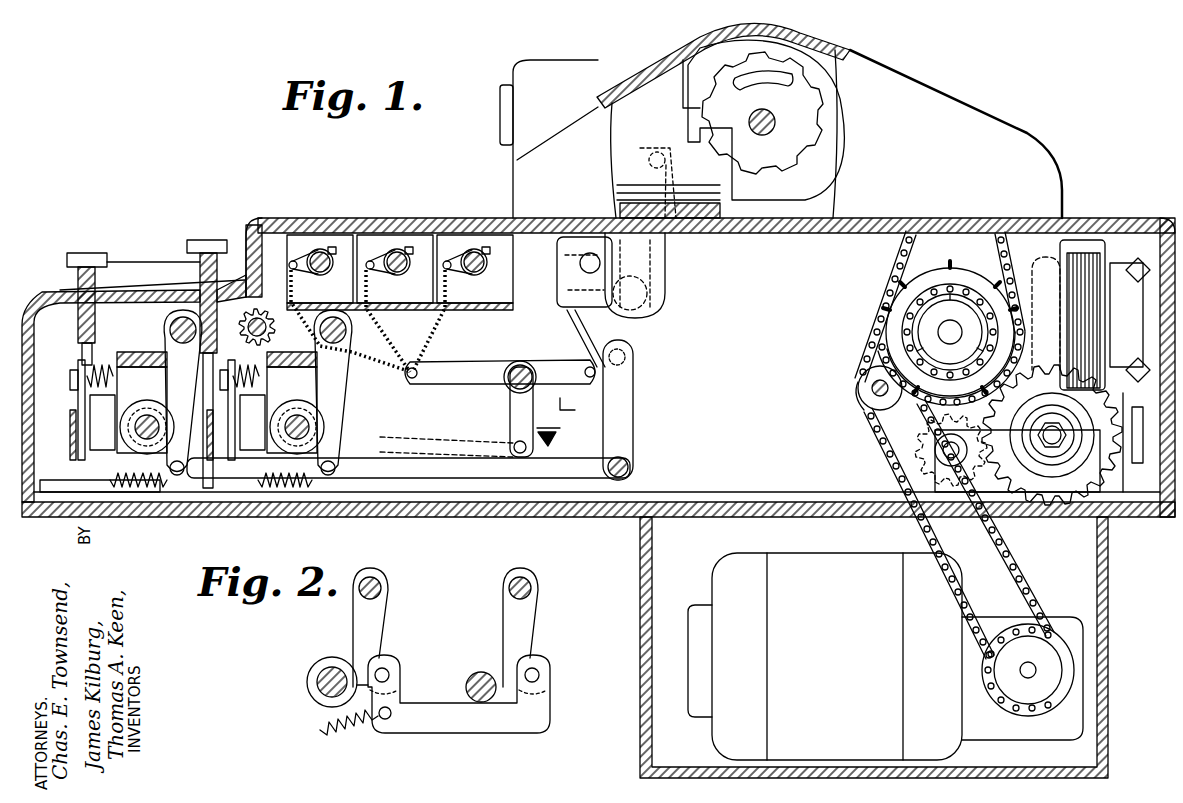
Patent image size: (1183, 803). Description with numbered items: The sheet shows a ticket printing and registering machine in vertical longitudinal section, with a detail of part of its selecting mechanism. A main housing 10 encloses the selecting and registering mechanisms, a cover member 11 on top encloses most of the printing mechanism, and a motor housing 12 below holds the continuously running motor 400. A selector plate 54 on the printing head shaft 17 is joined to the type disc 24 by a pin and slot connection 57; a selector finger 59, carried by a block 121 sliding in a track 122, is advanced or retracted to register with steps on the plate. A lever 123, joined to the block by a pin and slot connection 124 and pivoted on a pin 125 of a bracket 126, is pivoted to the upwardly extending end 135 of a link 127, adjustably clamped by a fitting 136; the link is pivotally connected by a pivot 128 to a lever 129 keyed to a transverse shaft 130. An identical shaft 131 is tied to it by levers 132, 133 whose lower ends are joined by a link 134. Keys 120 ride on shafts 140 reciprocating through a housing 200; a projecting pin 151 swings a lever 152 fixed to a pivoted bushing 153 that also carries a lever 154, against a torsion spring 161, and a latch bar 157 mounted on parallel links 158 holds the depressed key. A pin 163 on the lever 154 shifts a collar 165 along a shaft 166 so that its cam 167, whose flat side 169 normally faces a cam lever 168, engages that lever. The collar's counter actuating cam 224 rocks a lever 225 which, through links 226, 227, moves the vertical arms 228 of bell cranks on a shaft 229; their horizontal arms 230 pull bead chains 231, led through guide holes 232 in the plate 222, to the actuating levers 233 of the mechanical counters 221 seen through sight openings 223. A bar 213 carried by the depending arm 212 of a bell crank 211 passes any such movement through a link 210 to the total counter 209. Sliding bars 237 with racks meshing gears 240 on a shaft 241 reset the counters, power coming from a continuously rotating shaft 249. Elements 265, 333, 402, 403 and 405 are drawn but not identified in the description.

In FIG. 1, the main housing 10 is at (256, 222).
In FIG. 1, the cover member 11 is at (948, 86).
In FIG. 1, the motor housing 12 is at (1108, 590).
In FIG. 1, the printing head shaft 17 is at (775, 118).
In FIG. 1, the type disc 24 is at (693, 72).
In FIG. 1, the selector plate 54 is at (800, 130).
In FIG. 1, the pin and slot connection 57 is at (762, 70).
In FIG. 1, the selector finger 59 is at (722, 110).
In FIG. 1, the keys 120 is at (108, 252).
In FIG. 1, the block 121 is at (676, 145).
In FIG. 1, the track 122 is at (640, 197).
In FIG. 1, the lever 123 is at (645, 185).
In FIG. 1, the pin and slot connection 124 is at (650, 152).
In FIG. 1, the pin 125 is at (648, 293).
In FIG. 1, the bracket 126 is at (665, 268).
In FIG. 1, the link 127 is at (567, 464).
In FIG. 1, the pivot 128 is at (340, 412).
In FIG. 1, the lever 129 is at (342, 385).
In FIG. 1, the shaft 130 is at (355, 325).
In FIG. 2, the shaft 130 is at (535, 586).
In FIG. 1, the shaft 131 is at (173, 322).
In FIG. 2, the shaft 131 is at (382, 584).
In FIG. 2, the lever 132 is at (536, 617).
In FIG. 2, the lever 133 is at (390, 619).
In FIG. 2, the link 134 is at (440, 734).
In FIG. 1, the upwardly extending end 135 is at (634, 415).
In FIG. 1, the fitting 136 is at (630, 467).
In FIG. 1, the shafts 140 is at (153, 259).
In FIG. 1, the projecting pin 151 is at (80, 365).
In FIG. 1, the lever 152 is at (85, 384).
In FIG. 1, the pivoted bushing 153 is at (88, 373).
In FIG. 1, the lever 154 is at (92, 396).
In FIG. 1, the latch bar 157 is at (70, 430).
In FIG. 1, the parallel link 158 is at (80, 462).
In FIG. 1, the torsion spring 161 is at (135, 368).
In FIG. 1, the pin 163 is at (130, 412).
In FIG. 1, the collar 165 is at (150, 440).
In FIG. 1, the shaft 166 is at (137, 428).
In FIG. 2, the shaft 166 is at (318, 672).
In FIG. 1, the cam 167 is at (155, 480).
In FIG. 1, the cam lever 168 is at (217, 350).
In FIG. 1, the flat side 169 is at (160, 377).
In FIG. 1, the housing 200 is at (198, 288).
In FIG. 1, the total counter 209 is at (568, 248).
In FIG. 1, the link 210 is at (580, 322).
In FIG. 1, the bell crank 211 is at (579, 398).
In FIG. 1, the depending arm 212 is at (560, 412).
In FIG. 1, the bar 213 is at (556, 434).
In FIG. 1, the mechanical counters 221 is at (293, 235).
In FIG. 1, the plate 222 is at (462, 306).
In FIG. 1, the sight openings 223 is at (320, 248).
In FIG. 1, the counter actuating cam 224 is at (292, 400).
In FIG. 1, the lever 225 is at (143, 472).
In FIG. 1, the link 226 is at (432, 455).
In FIG. 1, the link 227 is at (262, 480).
In FIG. 1, the vertical arms 228 is at (512, 408).
In FIG. 1, the shaft 229 is at (525, 372).
In FIG. 1, the horizontal arms 230 is at (450, 366).
In FIG. 1, the bead chain 231 is at (430, 326).
In FIG. 1, the guide holes 232 is at (362, 300).
In FIG. 1, the actuating levers 233 is at (310, 300).
In FIG. 1, the sliding bars 237 is at (248, 270).
In FIG. 1, the gear 240 is at (349, 320).
In FIG. 1, the shaft 241 is at (245, 323).
In FIG. 1, the continuously rotating shaft 249 is at (1050, 445).
In FIG. 1, the switch 265 is at (1118, 280).
In FIG. 1, the shaft 333 is at (968, 315).
In FIG. 1, the motor 400 is at (846, 655).
In FIG. 1, the sprocket 402 is at (1050, 655).
In FIG. 1, the chain 403 is at (862, 430).
In FIG. 1, the sprocket 405 is at (925, 334).